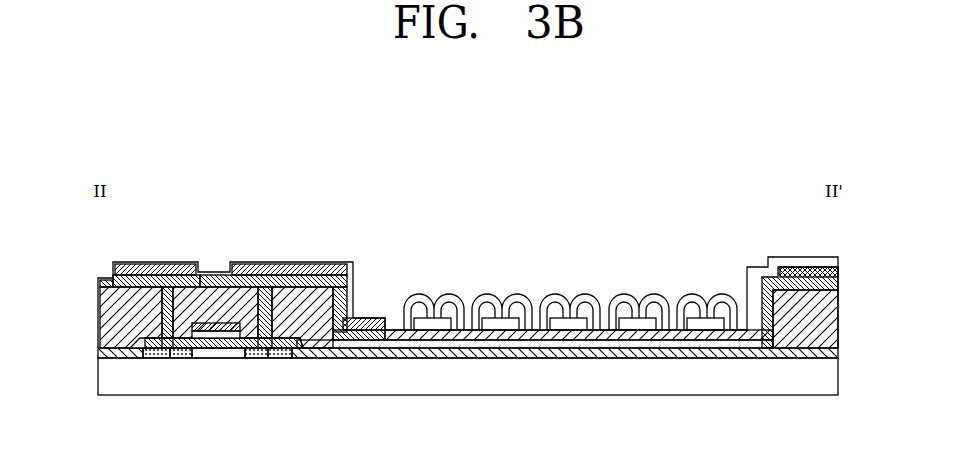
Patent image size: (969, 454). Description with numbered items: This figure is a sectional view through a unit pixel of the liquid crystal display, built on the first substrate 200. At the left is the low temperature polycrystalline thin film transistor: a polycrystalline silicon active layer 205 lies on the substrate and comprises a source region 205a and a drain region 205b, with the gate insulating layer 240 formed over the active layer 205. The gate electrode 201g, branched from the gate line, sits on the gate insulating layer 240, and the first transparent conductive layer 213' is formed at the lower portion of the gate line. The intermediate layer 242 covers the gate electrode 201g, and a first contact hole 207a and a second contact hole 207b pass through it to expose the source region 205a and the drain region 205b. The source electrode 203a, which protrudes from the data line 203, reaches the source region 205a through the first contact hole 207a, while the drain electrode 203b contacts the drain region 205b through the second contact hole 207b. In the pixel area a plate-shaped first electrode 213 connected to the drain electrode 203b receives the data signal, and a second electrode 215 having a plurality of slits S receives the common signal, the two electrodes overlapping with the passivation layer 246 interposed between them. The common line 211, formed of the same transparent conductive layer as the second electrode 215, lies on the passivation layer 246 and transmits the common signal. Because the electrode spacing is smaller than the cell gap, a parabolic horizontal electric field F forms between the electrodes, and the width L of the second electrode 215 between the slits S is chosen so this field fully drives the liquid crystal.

The first substrate 200 is at (105, 383).
The gate insulating layer 240 is at (100, 353).
The source region 205a is at (150, 358).
The first contact hole 207a is at (168, 358).
The active layer 205 is at (225, 358).
The second contact hole 207b is at (267, 358).
The drain region 205b is at (300, 358).
The intermediate layer 242 is at (105, 316).
The gate electrode 201g is at (197, 290).
The first transparent conductive layer 213' is at (226, 274).
The source electrode 203a is at (146, 283).
The drain electrode 203b is at (297, 283).
The second electrode 215 is at (350, 266).
The first electrode 213 is at (535, 385).
The data line 203 is at (793, 282).
The common line 211 is at (828, 262).
The passivation layer 246 is at (100, 280).
The slits S is at (541, 281).
The horizontal electric field F is at (456, 281).
The width of the second electrode L is at (659, 274).